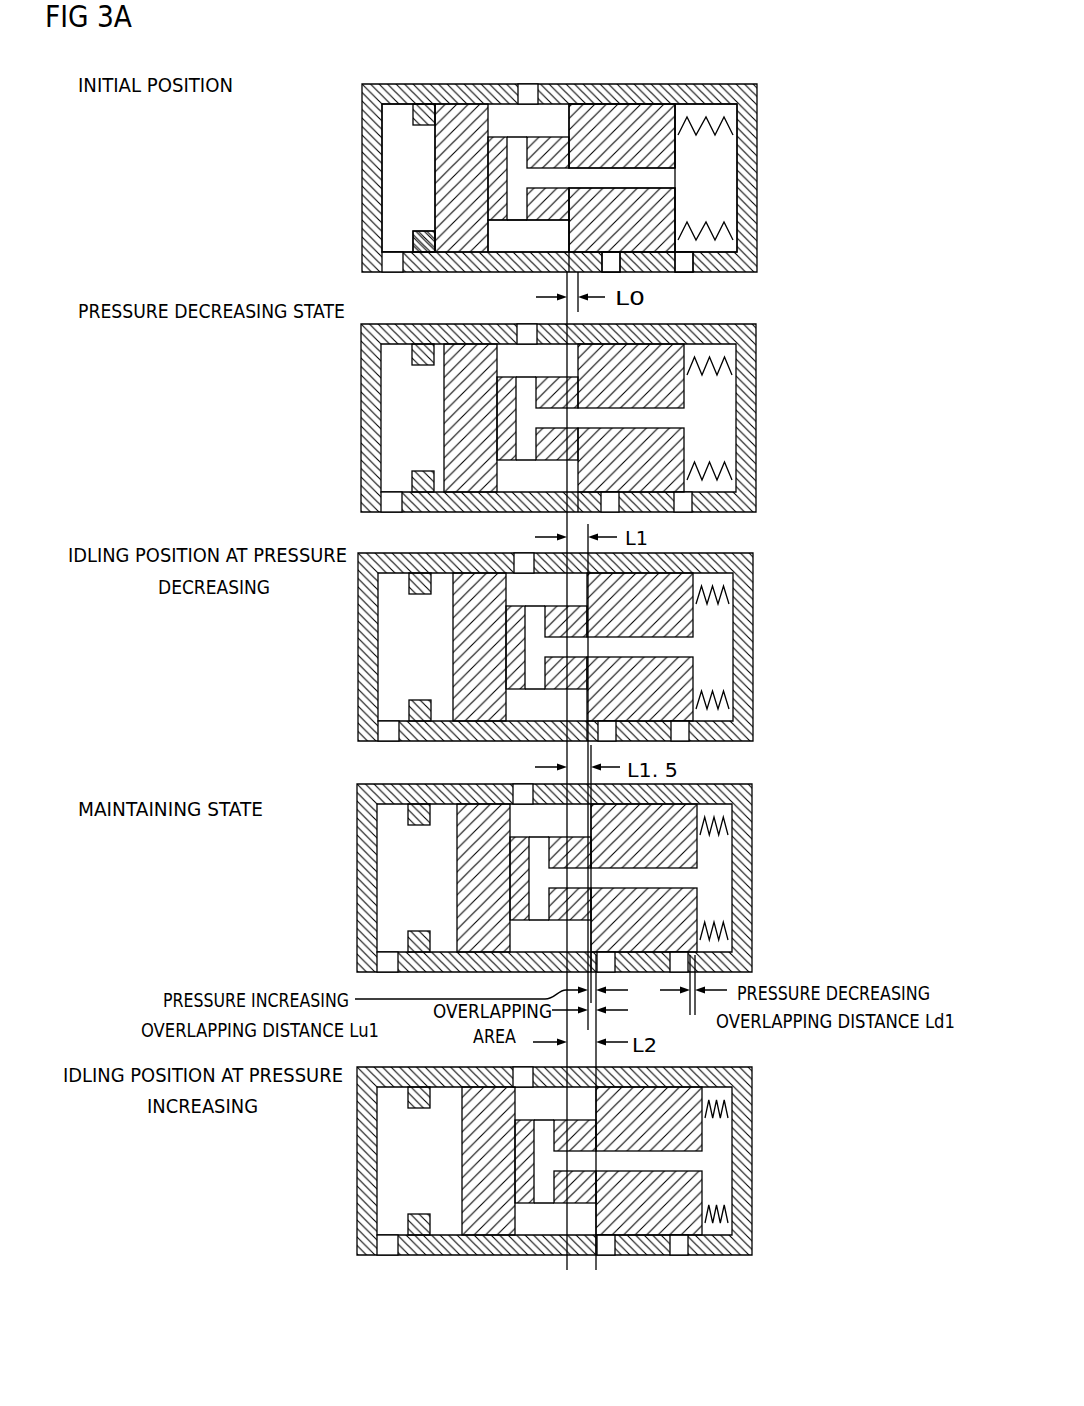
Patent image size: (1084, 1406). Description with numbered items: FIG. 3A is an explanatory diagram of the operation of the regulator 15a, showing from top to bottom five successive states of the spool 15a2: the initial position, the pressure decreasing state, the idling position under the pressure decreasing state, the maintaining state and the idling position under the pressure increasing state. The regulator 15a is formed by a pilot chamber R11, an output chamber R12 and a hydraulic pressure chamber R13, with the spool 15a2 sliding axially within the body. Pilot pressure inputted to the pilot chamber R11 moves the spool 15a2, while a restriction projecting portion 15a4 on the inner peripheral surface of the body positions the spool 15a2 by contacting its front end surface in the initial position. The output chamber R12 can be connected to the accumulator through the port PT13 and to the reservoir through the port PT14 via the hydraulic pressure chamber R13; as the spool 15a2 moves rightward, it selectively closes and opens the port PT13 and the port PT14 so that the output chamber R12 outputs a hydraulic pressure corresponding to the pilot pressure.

The regulator 15a is at (514, 669).
The pilot chamber R11 is at (390, 207).
The restriction projecting portion 15a4 is at (430, 240).
The output chamber R12 is at (512, 240).
The spool 15a2 is at (672, 157).
The hydraulic pressure chamber R13 is at (718, 178).
The port PT13 is at (612, 262).
The port PT14 is at (690, 260).